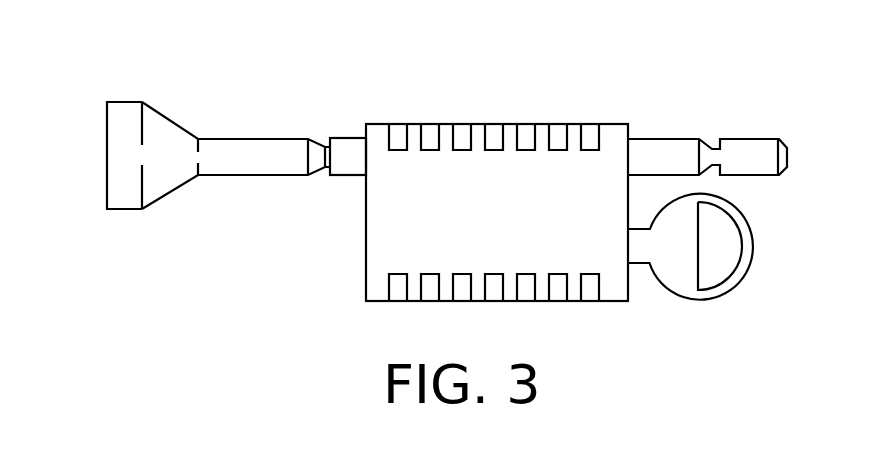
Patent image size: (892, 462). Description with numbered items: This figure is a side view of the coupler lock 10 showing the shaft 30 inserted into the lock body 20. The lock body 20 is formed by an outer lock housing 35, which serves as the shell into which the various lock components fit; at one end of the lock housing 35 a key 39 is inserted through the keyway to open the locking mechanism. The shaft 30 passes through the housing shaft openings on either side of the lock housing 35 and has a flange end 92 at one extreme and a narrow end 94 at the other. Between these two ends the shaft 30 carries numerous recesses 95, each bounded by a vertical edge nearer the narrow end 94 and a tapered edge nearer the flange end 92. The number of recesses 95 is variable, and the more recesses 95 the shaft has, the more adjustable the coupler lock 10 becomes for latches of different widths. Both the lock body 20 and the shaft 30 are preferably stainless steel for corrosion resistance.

The coupler lock 10 is at (446, 214).
The lock body 20 is at (464, 178).
The shaft 30 is at (343, 145).
The lock housing 35 is at (383, 240).
The key 39 is at (740, 268).
The flange end 92 is at (107, 119).
The narrow end 94 is at (782, 142).
The recesses 95 is at (320, 137).